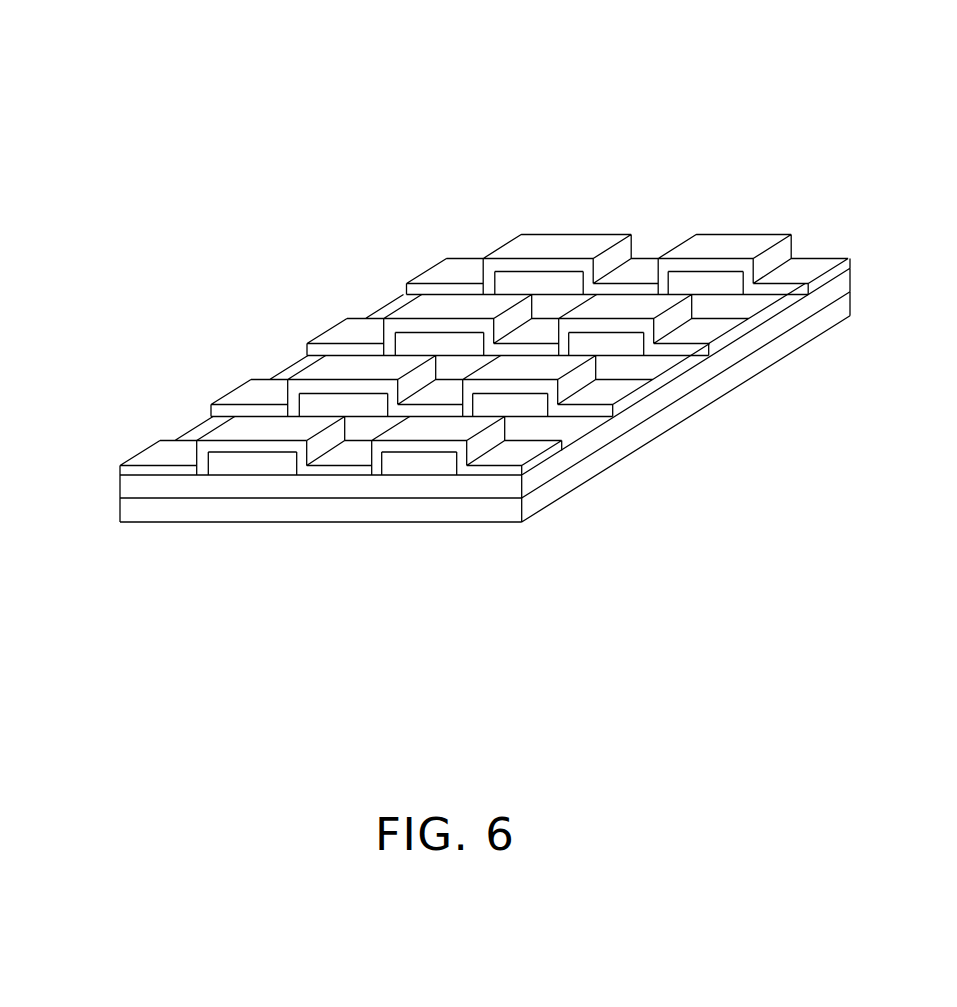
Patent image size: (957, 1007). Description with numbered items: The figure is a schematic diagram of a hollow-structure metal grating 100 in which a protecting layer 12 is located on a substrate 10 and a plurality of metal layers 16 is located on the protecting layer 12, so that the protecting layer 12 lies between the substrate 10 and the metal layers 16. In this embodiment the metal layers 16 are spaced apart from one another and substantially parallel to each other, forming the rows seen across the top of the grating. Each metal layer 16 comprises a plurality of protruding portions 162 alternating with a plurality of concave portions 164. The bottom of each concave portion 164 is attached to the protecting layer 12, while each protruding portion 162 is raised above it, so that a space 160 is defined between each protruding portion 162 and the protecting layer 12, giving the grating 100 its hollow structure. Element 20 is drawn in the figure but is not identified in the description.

The hollow-structure metal grating 100 is at (468, 78).
The substrate 10 is at (533, 498).
The protecting layer 12 is at (568, 461).
The metal layer 16 is at (476, 405).
The space 160 is at (247, 465).
The protruding portion 162 is at (231, 447).
The concave portion 164 is at (324, 442).
The second portion 20 is at (421, 470).